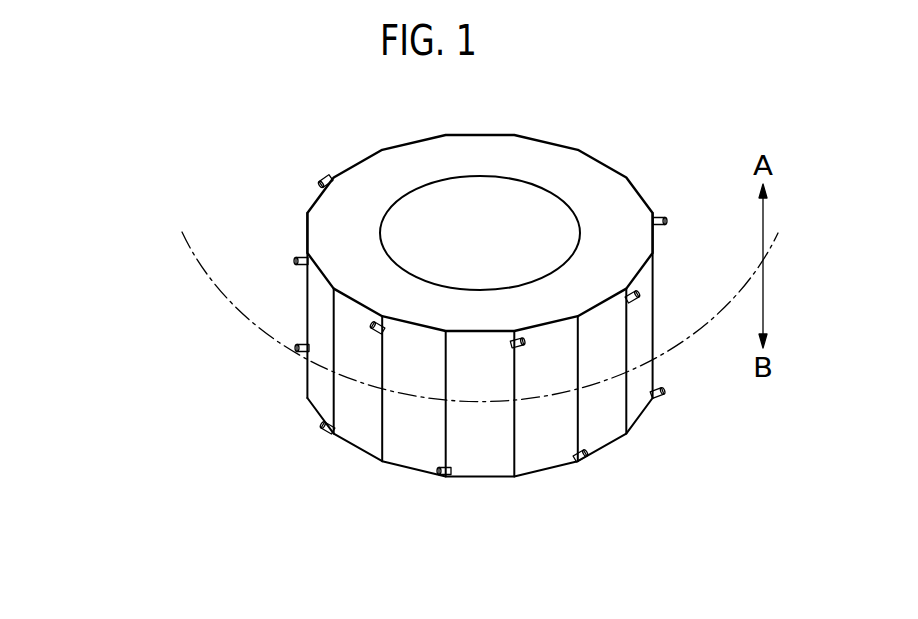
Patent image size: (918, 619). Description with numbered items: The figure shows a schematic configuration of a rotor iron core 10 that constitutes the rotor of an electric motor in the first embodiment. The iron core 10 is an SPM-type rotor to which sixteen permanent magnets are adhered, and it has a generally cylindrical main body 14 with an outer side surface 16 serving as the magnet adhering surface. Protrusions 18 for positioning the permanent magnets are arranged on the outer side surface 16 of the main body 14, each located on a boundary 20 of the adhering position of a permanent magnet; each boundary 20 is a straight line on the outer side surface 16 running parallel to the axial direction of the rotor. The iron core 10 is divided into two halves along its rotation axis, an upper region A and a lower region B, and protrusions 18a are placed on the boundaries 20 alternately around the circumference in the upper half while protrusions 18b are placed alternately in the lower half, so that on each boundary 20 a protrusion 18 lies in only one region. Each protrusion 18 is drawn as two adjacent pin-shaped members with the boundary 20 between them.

The rotor iron core 10 is at (240, 176).
The main body 14 is at (557, 158).
The outer side surface 16 is at (603, 406).
The protrusion 18 is at (171, 315).
The protrusions in region A 18a is at (368, 330).
The protrusions in region B 18b is at (437, 472).
The boundary 20 is at (447, 428).